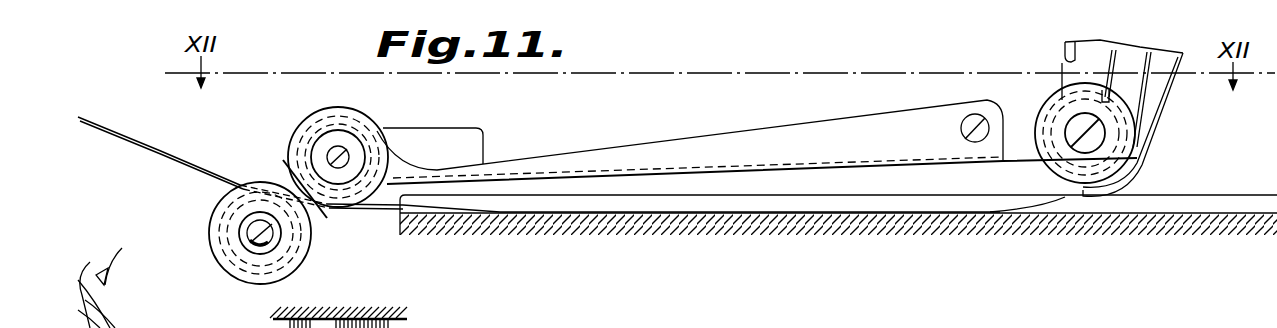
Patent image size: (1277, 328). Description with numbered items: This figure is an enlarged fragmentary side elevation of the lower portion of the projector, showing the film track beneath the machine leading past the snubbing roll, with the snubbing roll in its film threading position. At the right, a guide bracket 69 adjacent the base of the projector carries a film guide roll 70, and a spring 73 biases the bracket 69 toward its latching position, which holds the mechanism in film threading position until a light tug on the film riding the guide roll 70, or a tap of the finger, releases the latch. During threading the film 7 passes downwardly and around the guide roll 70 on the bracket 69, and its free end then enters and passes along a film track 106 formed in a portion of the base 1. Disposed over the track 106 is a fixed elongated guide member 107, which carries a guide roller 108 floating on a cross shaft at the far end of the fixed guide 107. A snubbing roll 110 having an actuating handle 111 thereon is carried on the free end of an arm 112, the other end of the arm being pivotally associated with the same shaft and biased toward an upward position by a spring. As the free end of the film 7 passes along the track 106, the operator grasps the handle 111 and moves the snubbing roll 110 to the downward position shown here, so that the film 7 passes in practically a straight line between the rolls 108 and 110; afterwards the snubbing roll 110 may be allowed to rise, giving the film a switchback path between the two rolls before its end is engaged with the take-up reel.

The base 1 is at (1154, 215).
The film 7 is at (160, 152).
The guide bracket 69 is at (1143, 117).
The film guide roll 70 is at (1057, 98).
The spring 73 is at (1063, 52).
The film track 106 is at (1062, 218).
The fixed elongated guide member 107 is at (745, 140).
The guide roller 108 is at (360, 110).
The snubbing roll 110 is at (300, 238).
The actuating handle 111 is at (298, 187).
The arm 112 is at (285, 178).